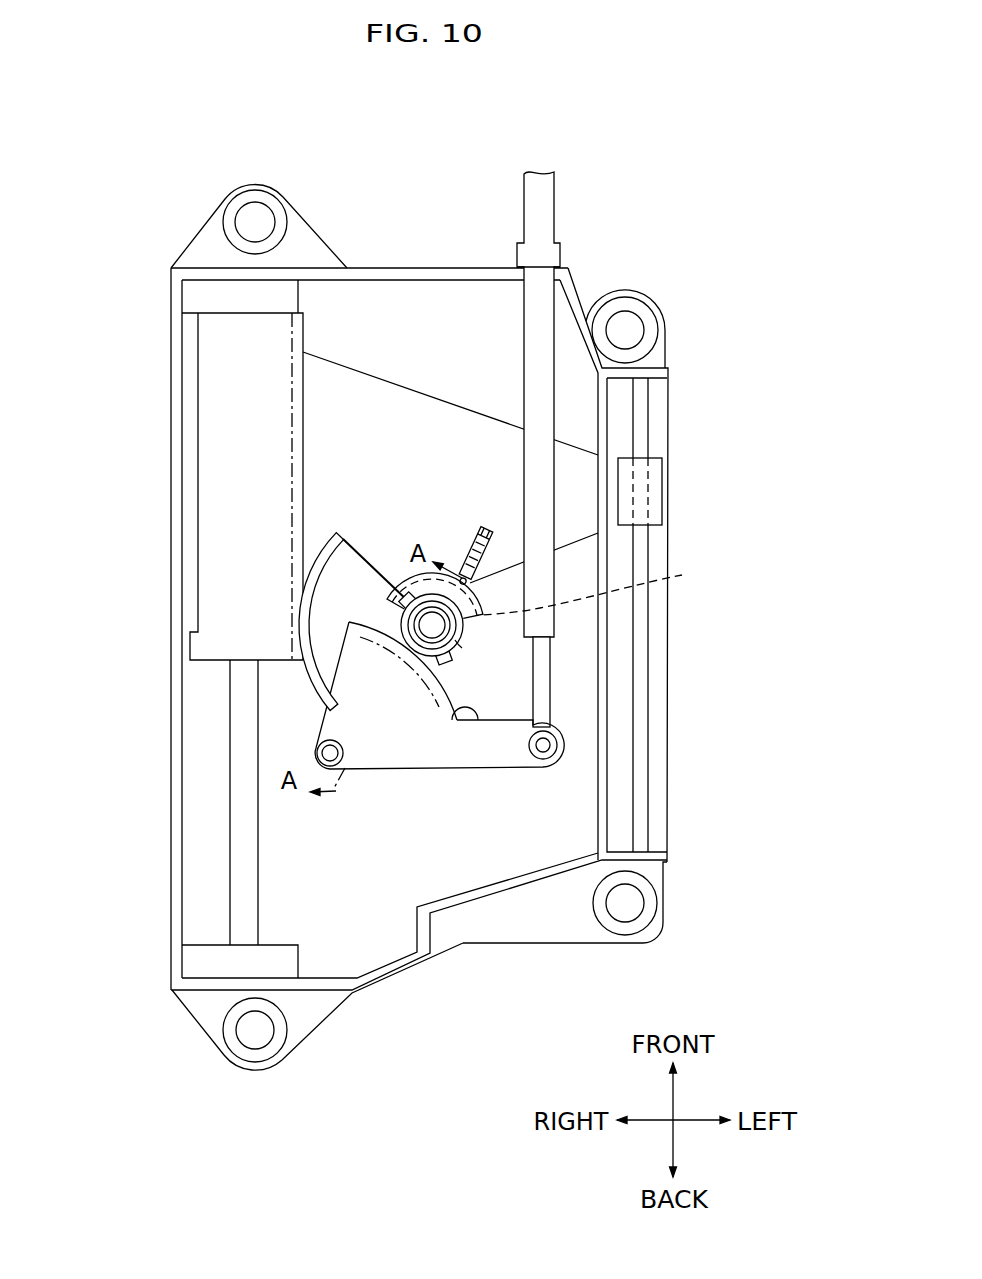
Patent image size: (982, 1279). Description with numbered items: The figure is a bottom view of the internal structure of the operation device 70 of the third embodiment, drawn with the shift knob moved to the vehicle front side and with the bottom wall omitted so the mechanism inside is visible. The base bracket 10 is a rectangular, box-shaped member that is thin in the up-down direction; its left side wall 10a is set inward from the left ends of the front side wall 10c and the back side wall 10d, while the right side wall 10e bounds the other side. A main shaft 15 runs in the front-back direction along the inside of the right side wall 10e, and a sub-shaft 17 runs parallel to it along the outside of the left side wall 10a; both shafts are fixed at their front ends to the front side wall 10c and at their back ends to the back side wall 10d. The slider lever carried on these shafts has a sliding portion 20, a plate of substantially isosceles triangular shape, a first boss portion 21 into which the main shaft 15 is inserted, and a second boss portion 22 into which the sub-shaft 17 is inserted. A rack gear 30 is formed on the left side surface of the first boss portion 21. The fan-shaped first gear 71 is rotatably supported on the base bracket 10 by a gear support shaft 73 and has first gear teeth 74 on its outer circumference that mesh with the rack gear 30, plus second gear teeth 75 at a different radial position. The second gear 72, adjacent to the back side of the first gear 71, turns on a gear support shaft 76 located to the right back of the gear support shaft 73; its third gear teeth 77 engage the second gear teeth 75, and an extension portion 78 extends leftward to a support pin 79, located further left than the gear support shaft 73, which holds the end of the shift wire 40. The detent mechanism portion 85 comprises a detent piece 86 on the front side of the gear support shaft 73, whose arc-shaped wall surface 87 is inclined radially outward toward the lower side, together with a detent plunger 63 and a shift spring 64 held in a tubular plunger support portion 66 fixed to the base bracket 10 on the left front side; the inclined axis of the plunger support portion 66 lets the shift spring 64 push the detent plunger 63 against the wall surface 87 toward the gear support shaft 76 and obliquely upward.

The base bracket 10 is at (617, 290).
The left side wall 10a is at (600, 415).
The front side wall 10c is at (397, 267).
The back side wall 10d is at (310, 990).
The right side wall 10e is at (170, 362).
The main shaft 15 is at (228, 820).
The sub-shaft 17 is at (650, 810).
The sliding portion 20 is at (443, 399).
The first boss portion 21 is at (207, 588).
The second boss portion 22 is at (662, 488).
The rack gear 30 is at (303, 462).
The shift wire 40 is at (553, 197).
The detent plunger 63 is at (478, 584).
The shift spring 64 is at (466, 535).
The plunger support portion 66 is at (489, 523).
The operation device 70 is at (728, 205).
The first gear 71 is at (362, 558).
The second gear 72 is at (397, 770).
The gear support shaft 73 is at (436, 629).
The first gear teeth 74 is at (323, 540).
The second gear teeth 75 is at (393, 598).
The gear support shaft 76 is at (316, 753).
The third gear teeth 77 is at (470, 722).
The extension portion 78 is at (515, 772).
The support pin 79 is at (565, 744).
The detent mechanism portion 85 is at (439, 545).
The detent piece 86 is at (458, 636).
The wall surface 87 is at (552, 589).